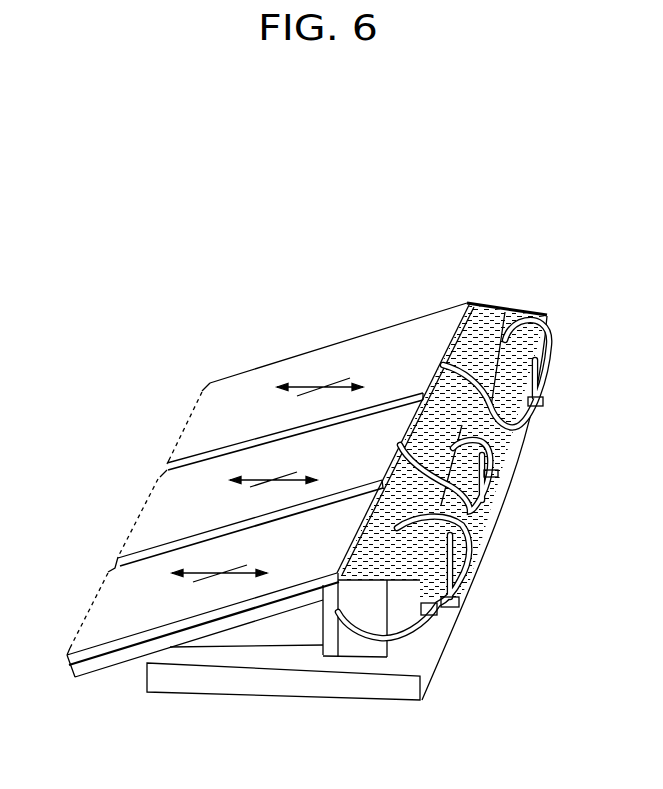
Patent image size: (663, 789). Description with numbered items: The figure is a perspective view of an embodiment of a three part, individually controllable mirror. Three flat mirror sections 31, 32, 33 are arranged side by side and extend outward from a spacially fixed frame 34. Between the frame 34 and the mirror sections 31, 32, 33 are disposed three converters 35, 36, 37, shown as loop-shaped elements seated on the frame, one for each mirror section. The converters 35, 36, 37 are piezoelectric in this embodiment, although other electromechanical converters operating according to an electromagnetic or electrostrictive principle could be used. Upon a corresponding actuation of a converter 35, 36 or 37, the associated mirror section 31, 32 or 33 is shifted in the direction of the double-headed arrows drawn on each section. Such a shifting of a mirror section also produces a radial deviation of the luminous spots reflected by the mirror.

The mirror section 31 is at (202, 404).
The mirror section 32 is at (157, 518).
The mirror section 33 is at (107, 613).
The spacially fixed frame 34 is at (282, 690).
The converter 35 is at (380, 555).
The converter 36 is at (440, 452).
The converter 37 is at (483, 358).